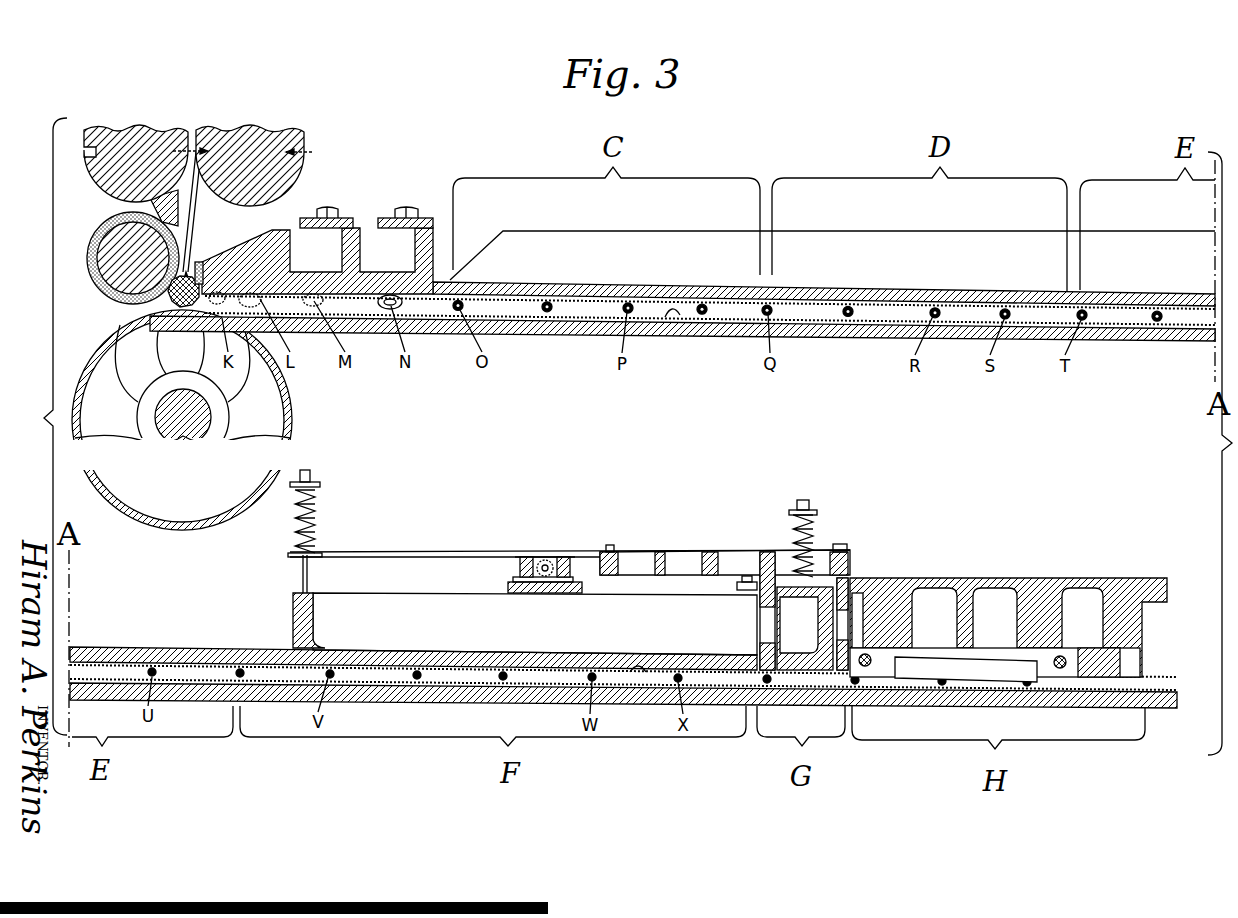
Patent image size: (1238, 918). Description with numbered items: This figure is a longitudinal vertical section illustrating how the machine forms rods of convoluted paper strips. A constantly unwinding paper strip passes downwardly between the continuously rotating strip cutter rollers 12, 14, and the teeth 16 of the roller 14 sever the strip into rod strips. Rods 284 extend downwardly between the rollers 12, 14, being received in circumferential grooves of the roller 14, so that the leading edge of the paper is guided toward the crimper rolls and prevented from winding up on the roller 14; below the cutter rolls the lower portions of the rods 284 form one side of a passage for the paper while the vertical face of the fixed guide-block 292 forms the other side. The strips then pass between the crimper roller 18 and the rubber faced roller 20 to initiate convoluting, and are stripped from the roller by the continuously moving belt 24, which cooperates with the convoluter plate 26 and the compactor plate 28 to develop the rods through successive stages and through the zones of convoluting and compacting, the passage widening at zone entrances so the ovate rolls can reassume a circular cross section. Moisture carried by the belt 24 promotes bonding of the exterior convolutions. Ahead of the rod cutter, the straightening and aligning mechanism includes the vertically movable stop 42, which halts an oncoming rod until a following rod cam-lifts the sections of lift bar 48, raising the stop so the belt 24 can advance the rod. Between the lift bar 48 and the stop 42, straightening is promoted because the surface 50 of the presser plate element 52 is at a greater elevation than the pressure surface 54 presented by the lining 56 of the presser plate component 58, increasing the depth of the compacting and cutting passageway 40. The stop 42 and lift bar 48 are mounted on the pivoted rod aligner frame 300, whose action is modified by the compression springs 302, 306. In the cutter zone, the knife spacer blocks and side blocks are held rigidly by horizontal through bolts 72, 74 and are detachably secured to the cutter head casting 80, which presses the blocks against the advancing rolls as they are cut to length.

The strip cutter roller 12 is at (100, 182).
The strip cutter roller 14 is at (230, 172).
The teeth 16 is at (312, 152).
The crimper roller 18 is at (159, 322).
The rubber faced roller 20 is at (108, 288).
The belt 24 is at (665, 319).
The convoluter plate 26 is at (366, 270).
The compactor plate 28 is at (577, 283).
The compacting and cutting passageway 40 is at (1124, 682).
The straight-edge or stop 42 is at (857, 590).
The lift bar 48 is at (758, 647).
The surface 50 is at (807, 666).
The presser plate element 52 is at (821, 622).
The pressure surface 54 is at (718, 678).
The lining 56 is at (640, 671).
The presser plate component 58 is at (540, 660).
The through bolt 72 is at (869, 666).
The through bolt 74 is at (1062, 668).
The cutter head casting 80 is at (998, 578).
The rod 284 is at (187, 226).
The fixed guide-block 292 is at (167, 192).
The pivoted rod aligner frame 300 is at (713, 552).
The compression spring 302 is at (318, 517).
The compression spring 306 is at (815, 525).